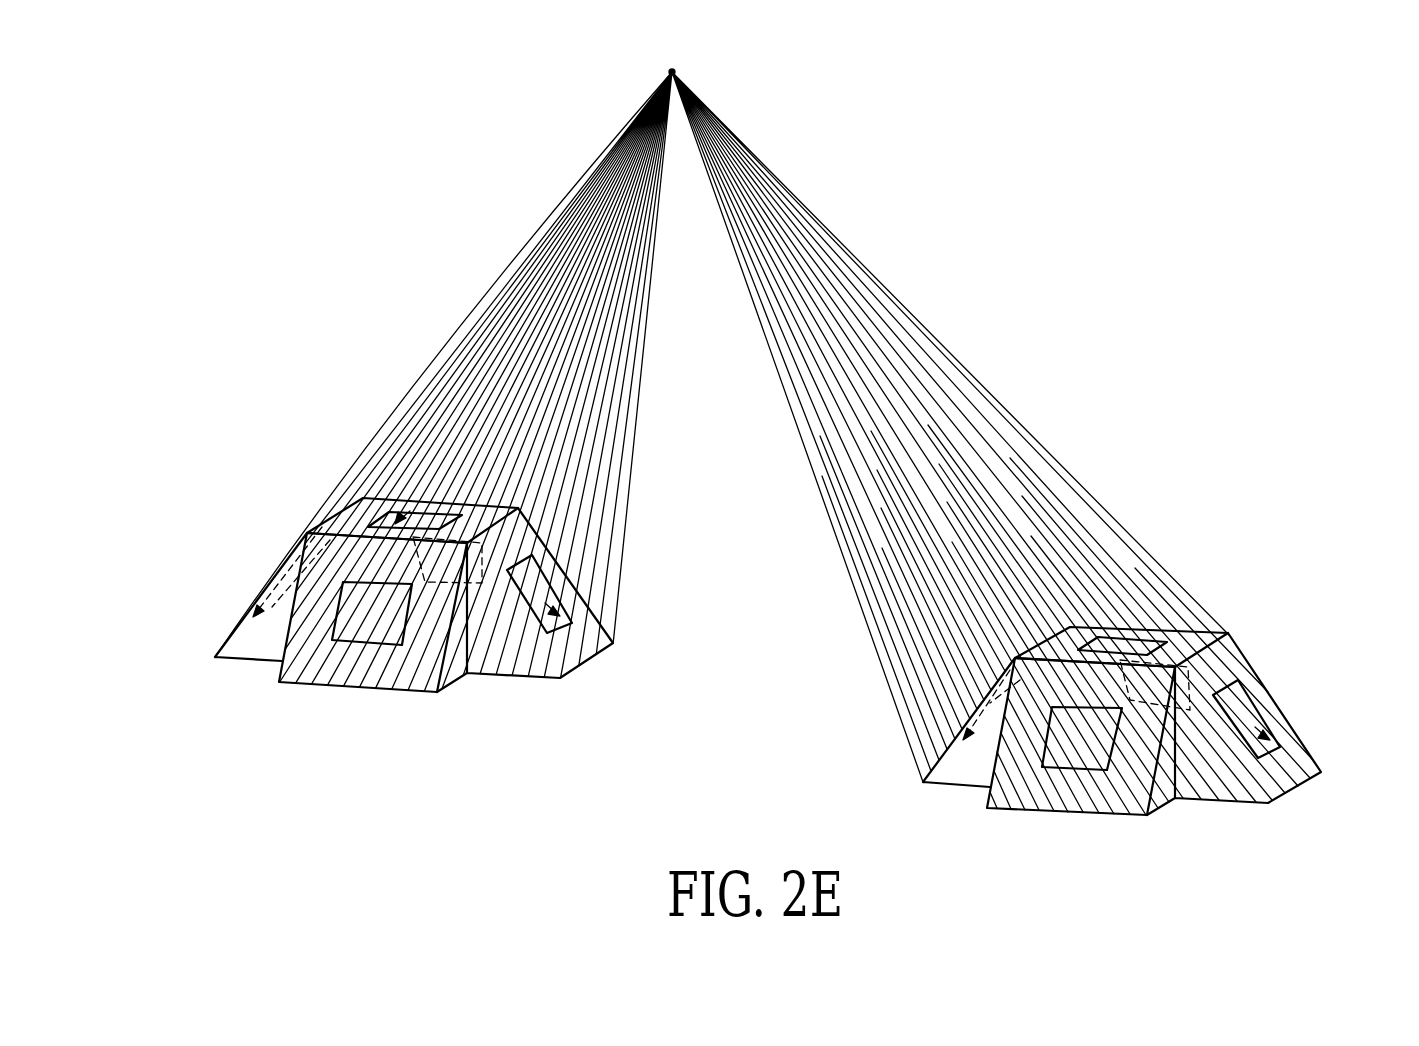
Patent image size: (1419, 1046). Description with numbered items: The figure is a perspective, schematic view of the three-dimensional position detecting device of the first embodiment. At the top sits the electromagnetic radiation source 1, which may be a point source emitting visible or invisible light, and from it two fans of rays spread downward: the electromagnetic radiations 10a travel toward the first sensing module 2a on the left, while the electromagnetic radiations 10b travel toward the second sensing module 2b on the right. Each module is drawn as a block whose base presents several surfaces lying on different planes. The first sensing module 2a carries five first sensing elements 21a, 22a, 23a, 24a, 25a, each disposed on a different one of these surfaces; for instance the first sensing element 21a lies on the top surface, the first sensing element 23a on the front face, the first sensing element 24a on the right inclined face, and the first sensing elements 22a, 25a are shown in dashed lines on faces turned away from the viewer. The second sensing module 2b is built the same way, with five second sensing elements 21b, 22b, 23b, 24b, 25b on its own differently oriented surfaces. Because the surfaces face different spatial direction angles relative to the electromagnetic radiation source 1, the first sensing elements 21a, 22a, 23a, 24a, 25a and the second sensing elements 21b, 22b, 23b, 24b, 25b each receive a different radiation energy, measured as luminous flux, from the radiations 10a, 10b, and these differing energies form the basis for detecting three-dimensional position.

The electromagnetic radiation source 1 is at (686, 71).
The electromagnetic radiations 10a is at (511, 258).
The electromagnetic radiations 10b is at (860, 265).
The first sensing module 2a is at (440, 569).
The second sensing module 2b is at (1116, 696).
The first sensing element 21a is at (396, 515).
The second sensing element 21b is at (1127, 633).
The first sensing element 22a is at (278, 562).
The second sensing element 22b is at (970, 695).
The first sensing element 23a is at (366, 626).
The second sensing element 23b is at (1075, 753).
The first sensing element 24a is at (566, 640).
The second sensing element 24b is at (1287, 752).
The first sensing element 25a is at (458, 578).
The second sensing element 25b is at (1164, 703).